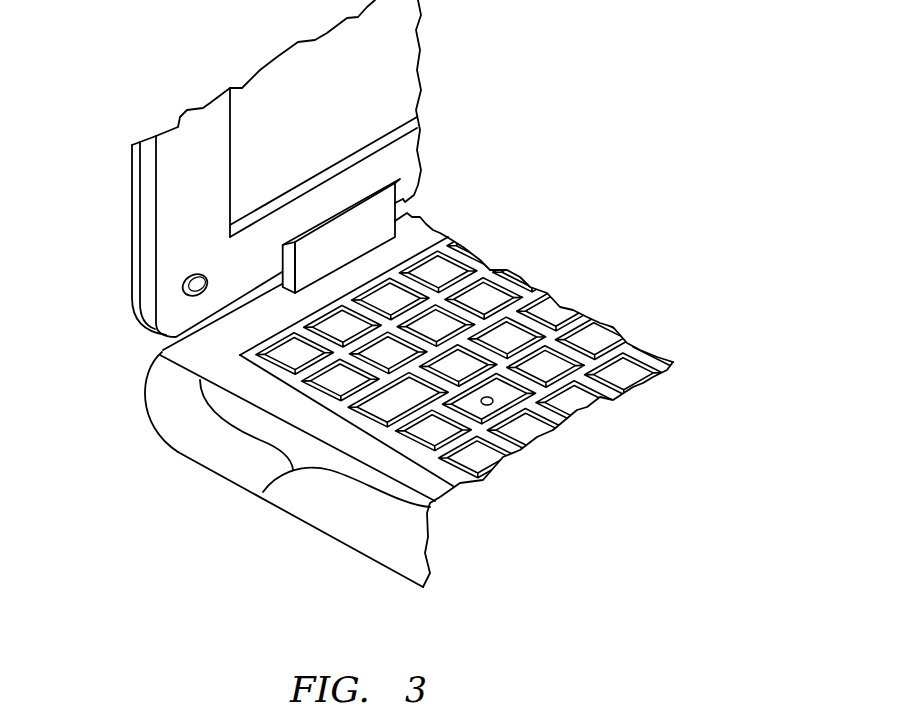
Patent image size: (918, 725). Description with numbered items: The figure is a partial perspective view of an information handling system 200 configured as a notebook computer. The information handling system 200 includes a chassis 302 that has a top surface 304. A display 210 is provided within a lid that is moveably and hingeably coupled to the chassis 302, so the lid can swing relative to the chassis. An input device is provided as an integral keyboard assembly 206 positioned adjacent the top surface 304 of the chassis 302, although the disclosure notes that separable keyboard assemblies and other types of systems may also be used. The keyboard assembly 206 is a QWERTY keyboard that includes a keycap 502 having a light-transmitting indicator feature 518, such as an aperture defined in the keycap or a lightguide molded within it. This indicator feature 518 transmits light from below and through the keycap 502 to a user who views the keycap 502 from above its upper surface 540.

The information handling system 200 is at (694, 142).
The display 210 is at (260, 118).
The top surface 304 is at (232, 341).
The chassis 302 is at (202, 442).
The keyboard assembly 206 is at (264, 491).
The keycap 502 is at (456, 445).
The light-transmitting indicator feature 518 is at (497, 404).
The upper surface 540 is at (460, 413).